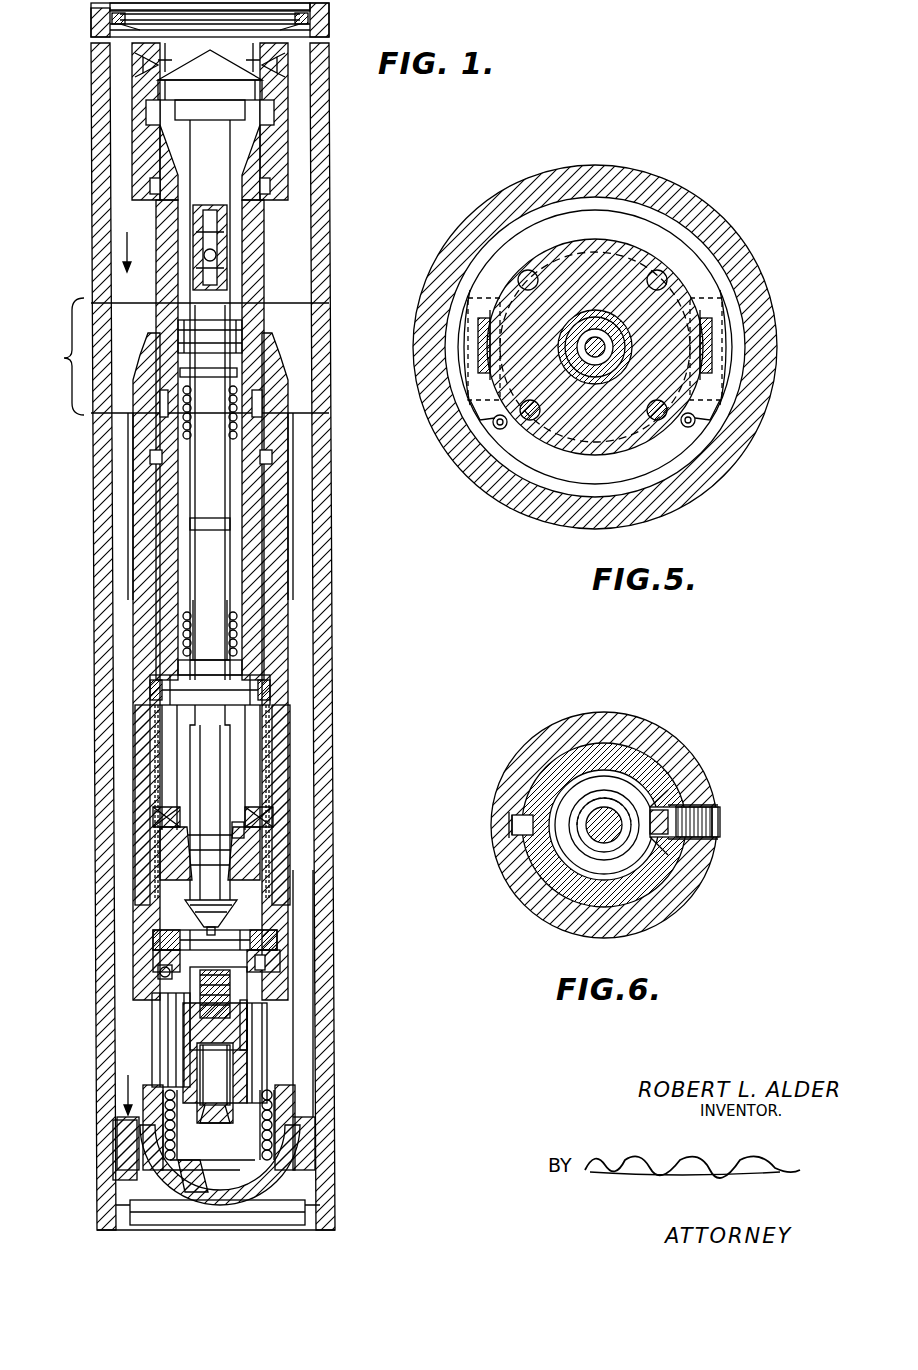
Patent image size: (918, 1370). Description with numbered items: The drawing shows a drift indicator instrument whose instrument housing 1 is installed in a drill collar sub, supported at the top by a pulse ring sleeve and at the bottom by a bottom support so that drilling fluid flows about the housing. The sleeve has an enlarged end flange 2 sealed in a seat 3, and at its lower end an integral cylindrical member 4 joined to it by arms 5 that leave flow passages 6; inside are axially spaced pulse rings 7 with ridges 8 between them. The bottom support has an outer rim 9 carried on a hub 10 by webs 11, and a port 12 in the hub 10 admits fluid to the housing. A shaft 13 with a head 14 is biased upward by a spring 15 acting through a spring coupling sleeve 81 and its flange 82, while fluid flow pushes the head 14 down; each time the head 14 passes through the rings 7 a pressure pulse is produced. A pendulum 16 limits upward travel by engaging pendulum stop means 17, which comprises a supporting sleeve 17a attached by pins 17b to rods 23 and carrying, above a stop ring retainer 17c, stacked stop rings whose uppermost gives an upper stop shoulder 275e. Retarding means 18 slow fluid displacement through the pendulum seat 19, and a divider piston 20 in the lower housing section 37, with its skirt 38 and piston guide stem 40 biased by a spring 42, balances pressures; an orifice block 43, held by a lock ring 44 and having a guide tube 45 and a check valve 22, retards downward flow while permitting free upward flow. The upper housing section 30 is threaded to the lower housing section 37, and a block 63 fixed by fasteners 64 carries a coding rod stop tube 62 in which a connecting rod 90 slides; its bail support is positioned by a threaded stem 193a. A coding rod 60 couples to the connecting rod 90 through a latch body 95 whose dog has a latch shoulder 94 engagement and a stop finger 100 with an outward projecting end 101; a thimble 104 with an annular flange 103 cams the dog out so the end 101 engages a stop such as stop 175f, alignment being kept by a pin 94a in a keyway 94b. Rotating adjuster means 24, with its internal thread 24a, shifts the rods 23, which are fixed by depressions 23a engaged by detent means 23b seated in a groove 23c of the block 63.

In FIG. 1, the instrument housing 1 is at (275, 240).
In FIG. 1, the enlarged end flange 2 is at (96, 10).
In FIG. 1, the seat 3 is at (302, 24).
In FIG. 1, the cylindrical member 4 is at (266, 186).
In FIG. 1, the arms 5 is at (276, 155).
In FIG. 1, the flow passages 6 is at (150, 150).
In FIG. 1, the pulse rings 7 is at (190, 68).
In FIG. 1, the ridges 8 is at (145, 64).
In FIG. 1, the outer rim 9 is at (312, 1118).
In FIG. 1, the hub 10 is at (255, 1168).
In FIG. 1, the webs 11 is at (135, 1160).
In FIG. 1, the port 12 is at (225, 1195).
In FIG. 1, the shaft 13 is at (192, 204).
In FIG. 1, the head 14 is at (175, 95).
In FIG. 1, the spring 15 is at (185, 618).
In FIG. 1, the pendulum 16 is at (195, 880).
In FIG. 1, the pendulum stop means 17 is at (268, 862).
In FIG. 1, the supporting sleeve 17a is at (270, 893).
In FIG. 1, the pins 17b is at (145, 820).
In FIG. 1, the stop ring retainer 17c is at (180, 928).
In FIG. 1, the retarding means 18 is at (242, 1002).
In FIG. 1, the pendulum seat 19 is at (190, 920).
In FIG. 1, the divider piston 20 is at (268, 1087).
In FIG. 1, the check valve 22 is at (160, 972).
In FIG. 1, the rods 23 is at (266, 725).
In FIG. 5, the rods 23 is at (502, 305).
In FIG. 5, the depressions 23a is at (483, 347).
In FIG. 1, the detent means 23b is at (262, 350).
In FIG. 5, the detent means 23b is at (668, 242).
In FIG. 5, the groove 23c is at (662, 462).
In FIG. 1, the adjuster means 24 is at (300, 428).
In FIG. 1, the internal thread 24a is at (280, 398).
In FIG. 1, the upper housing section 30 is at (264, 280).
In FIG. 1, the lower housing section 37 is at (140, 780).
In FIG. 5, the lower housing section 37 is at (522, 503).
In FIG. 1, the skirt 38 is at (262, 1148).
In FIG. 1, the piston guide stem 40 is at (237, 1065).
In FIG. 1, the spring 42 is at (200, 1170).
In FIG. 1, the orifice block 43 is at (282, 966).
In FIG. 1, the lock ring 44 is at (160, 1000).
In FIG. 1, the guide tube 45 is at (248, 1025).
In FIG. 6, the coding rod 60 is at (607, 835).
In FIG. 6, the coding rod stop tube 62 is at (622, 724).
In FIG. 1, the block 63 is at (268, 682).
In FIG. 5, the block 63 is at (613, 252).
In FIG. 5, the fasteners 64 is at (520, 278).
In FIG. 1, the spring coupling sleeve 81 is at (215, 512).
In FIG. 1, the flange 82 is at (235, 373).
In FIG. 5, the connecting rod 90 is at (580, 370).
In FIG. 6, the latch shoulder 94 is at (550, 872).
In FIG. 6, the pin 94a is at (513, 832).
In FIG. 6, the keyway 94b is at (517, 817).
In FIG. 6, the latch body 95 is at (565, 757).
In FIG. 6, the stop finger 100 is at (683, 847).
In FIG. 6, the outward projecting end 101 is at (700, 822).
In FIG. 6, the annular flange 103 is at (622, 863).
In FIG. 6, the thimble 104 is at (667, 800).
In FIG. 6, the stop 175f is at (700, 832).
In FIG. 5, the threaded stem 193a is at (593, 356).
In FIG. 1, the upper stop shoulder 275e is at (240, 830).